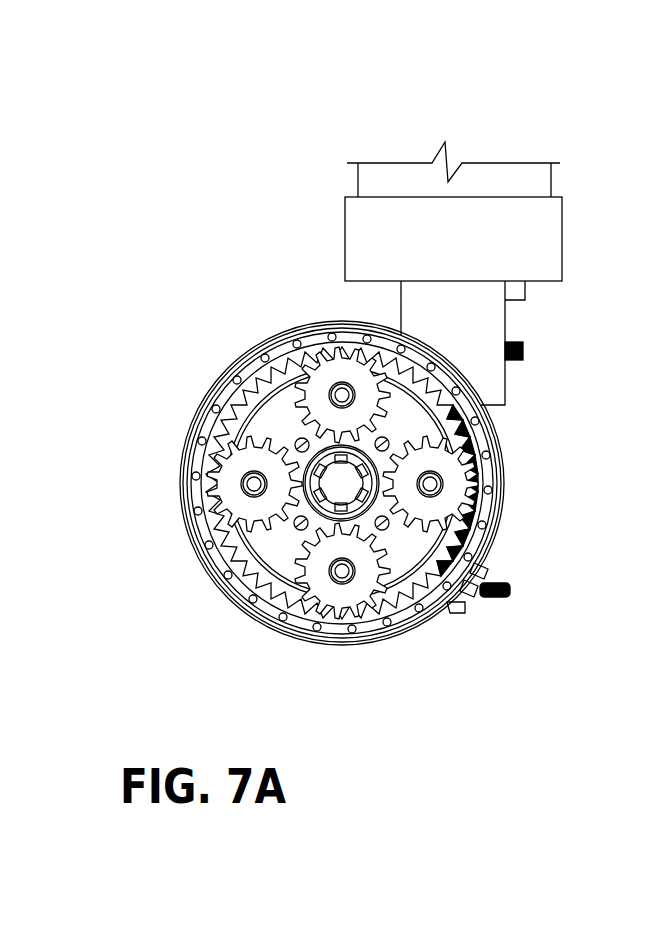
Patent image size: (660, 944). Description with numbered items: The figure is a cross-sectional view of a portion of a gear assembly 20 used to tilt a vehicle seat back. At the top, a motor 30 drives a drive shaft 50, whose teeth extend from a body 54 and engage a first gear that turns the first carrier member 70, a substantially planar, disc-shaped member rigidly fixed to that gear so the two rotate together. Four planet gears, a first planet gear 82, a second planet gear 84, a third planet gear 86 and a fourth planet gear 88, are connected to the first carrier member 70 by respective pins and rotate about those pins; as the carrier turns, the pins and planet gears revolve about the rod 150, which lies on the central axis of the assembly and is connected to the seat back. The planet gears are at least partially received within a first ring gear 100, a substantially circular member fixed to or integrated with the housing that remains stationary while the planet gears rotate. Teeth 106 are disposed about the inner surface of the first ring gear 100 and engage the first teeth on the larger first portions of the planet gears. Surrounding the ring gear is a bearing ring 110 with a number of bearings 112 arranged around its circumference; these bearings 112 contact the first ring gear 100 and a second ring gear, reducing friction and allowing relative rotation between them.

The gear assembly 20 is at (598, 120).
The motor 30 is at (585, 217).
The drive shaft 50 is at (447, 632).
The body 54 is at (463, 612).
The first carrier member 70 is at (267, 545).
The first planet gear 82 is at (339, 385).
The second planet gear 84 is at (437, 450).
The third planet gear 86 is at (331, 579).
The fourth planet gear 88 is at (241, 484).
The first ring gear 100 is at (503, 462).
The teeth 106 is at (240, 403).
The bearing ring 110 is at (488, 483).
The bearings 112 is at (498, 505).
The rod 150 is at (337, 490).